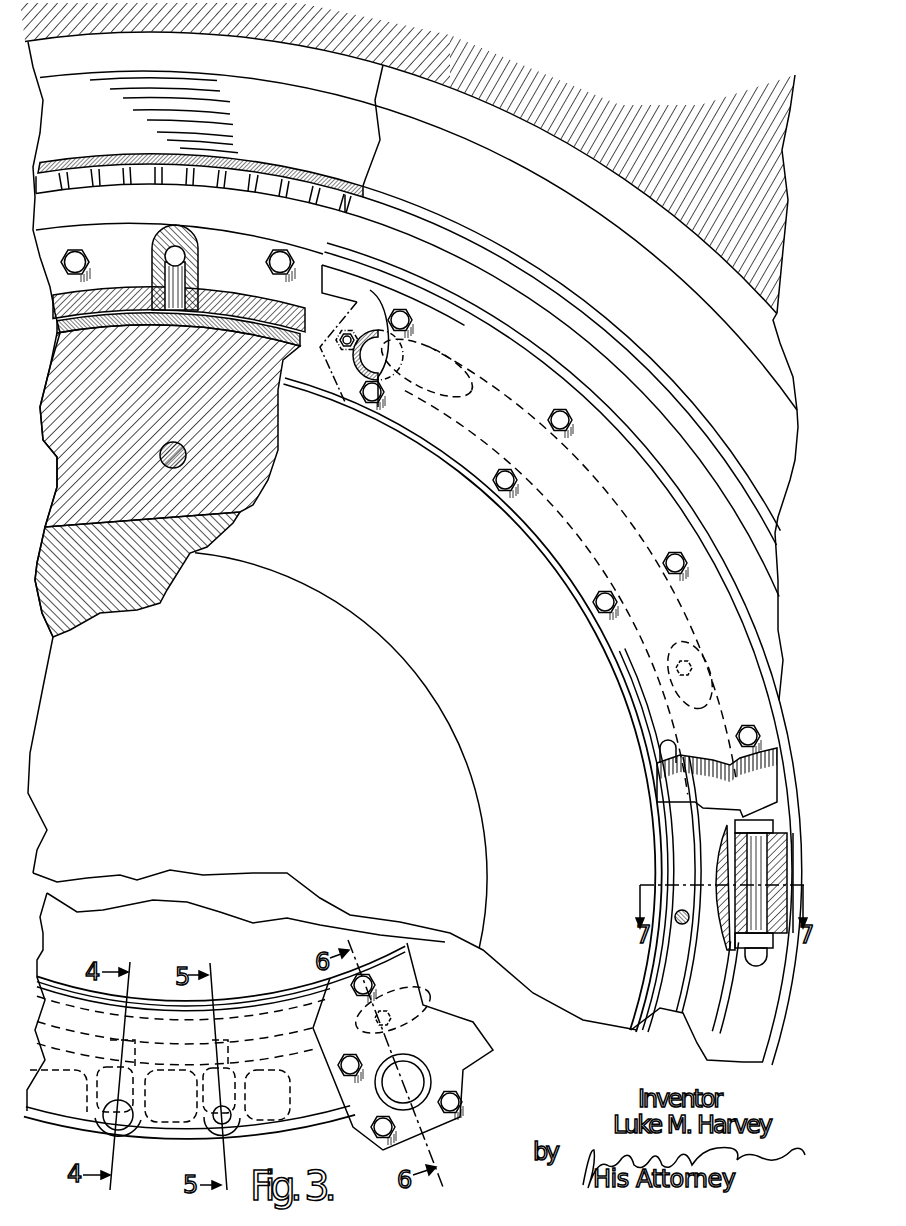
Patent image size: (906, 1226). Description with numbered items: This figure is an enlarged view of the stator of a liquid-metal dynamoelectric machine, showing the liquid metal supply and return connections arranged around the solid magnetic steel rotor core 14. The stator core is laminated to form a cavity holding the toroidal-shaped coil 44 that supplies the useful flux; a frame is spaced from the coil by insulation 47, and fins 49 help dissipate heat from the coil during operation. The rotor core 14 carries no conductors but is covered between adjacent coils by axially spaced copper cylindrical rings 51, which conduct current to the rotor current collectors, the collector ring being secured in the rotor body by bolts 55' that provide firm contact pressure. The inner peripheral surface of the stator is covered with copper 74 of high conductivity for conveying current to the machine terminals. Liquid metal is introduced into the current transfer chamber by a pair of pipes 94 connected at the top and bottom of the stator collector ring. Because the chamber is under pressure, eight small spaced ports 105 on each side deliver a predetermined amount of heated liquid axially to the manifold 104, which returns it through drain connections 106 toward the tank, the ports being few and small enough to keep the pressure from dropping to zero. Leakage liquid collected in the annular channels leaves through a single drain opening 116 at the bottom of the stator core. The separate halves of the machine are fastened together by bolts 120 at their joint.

The rotor core 14 is at (270, 727).
The toroidal-shaped coil 44 is at (280, 136).
The insulation 47 is at (305, 180).
The fins 49 is at (185, 190).
The copper cylindrical rings 51 is at (122, 312).
The bolts 55' is at (223, 495).
The copper 74 is at (230, 300).
The pipes 94 is at (178, 248).
The manifold 104 is at (718, 797).
The ports 105 is at (445, 1030).
The drain connections 106 is at (383, 302).
The drain opening 116 is at (118, 1122).
The bolts 120 is at (755, 870).